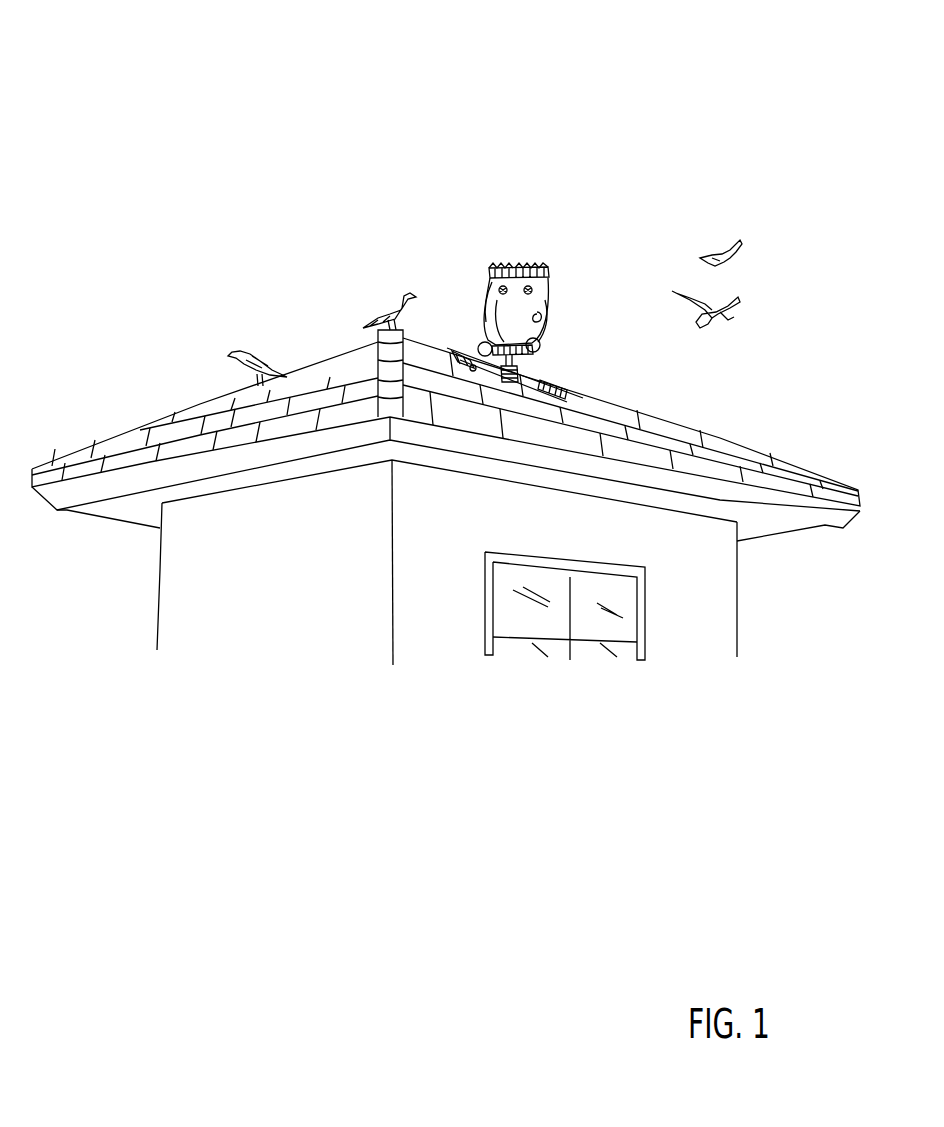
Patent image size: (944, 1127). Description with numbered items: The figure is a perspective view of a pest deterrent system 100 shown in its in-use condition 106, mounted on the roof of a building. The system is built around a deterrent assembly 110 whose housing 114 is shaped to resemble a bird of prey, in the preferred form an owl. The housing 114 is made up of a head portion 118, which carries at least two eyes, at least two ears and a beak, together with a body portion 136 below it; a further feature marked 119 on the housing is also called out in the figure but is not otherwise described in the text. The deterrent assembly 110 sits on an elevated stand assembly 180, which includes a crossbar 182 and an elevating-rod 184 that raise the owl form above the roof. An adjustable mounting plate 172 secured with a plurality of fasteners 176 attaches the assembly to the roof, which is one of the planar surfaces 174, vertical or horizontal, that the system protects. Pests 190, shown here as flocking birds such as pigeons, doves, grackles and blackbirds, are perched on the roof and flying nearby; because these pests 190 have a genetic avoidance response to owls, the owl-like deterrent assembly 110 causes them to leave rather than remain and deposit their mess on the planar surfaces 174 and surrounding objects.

The pest deterrent system 100 is at (686, 64).
The in-use condition 106 is at (718, 76).
The deterrent assembly 110 is at (557, 236).
The housing 114 is at (547, 316).
The head portion 118 is at (495, 268).
The second spike 119 is at (527, 268).
The body portion 136 is at (481, 300).
The adjustable mounting plate 172 is at (552, 384).
The planar surfaces 174 is at (655, 418).
The fasteners 176 is at (463, 349).
The elevated stand assembly 180 is at (518, 365).
The crossbar 182 is at (478, 337).
The elevating-rod 184 is at (546, 335).
The pests 190 is at (740, 318).